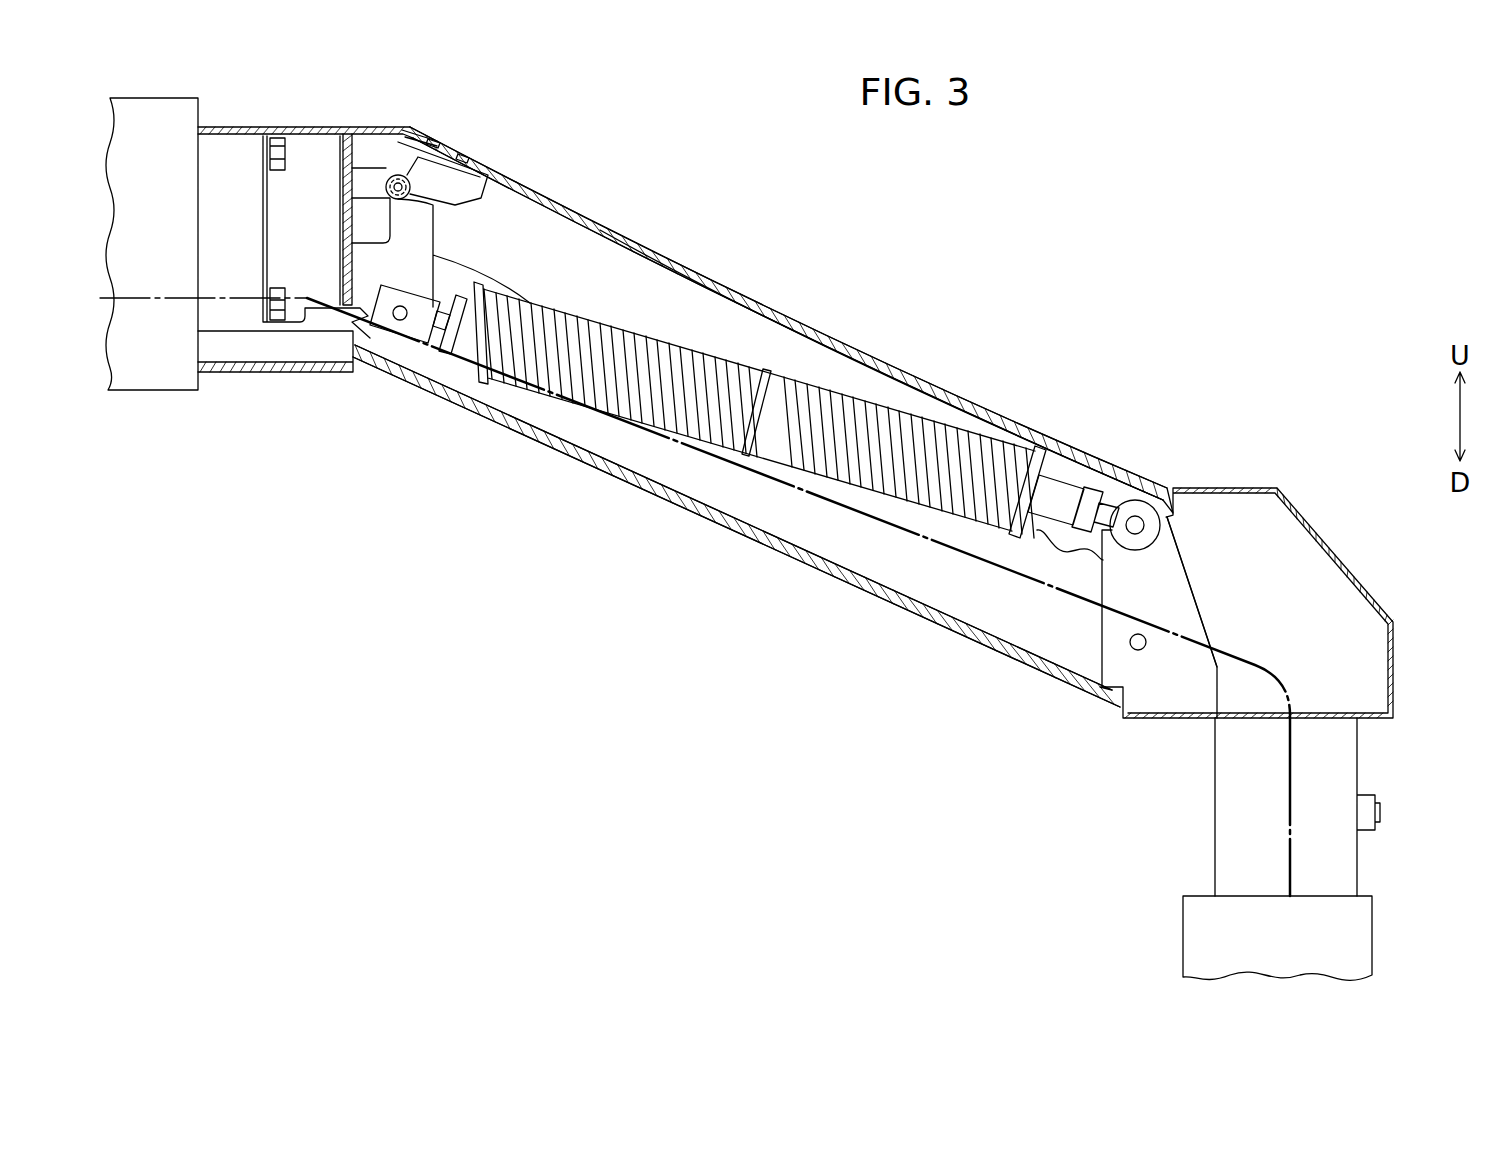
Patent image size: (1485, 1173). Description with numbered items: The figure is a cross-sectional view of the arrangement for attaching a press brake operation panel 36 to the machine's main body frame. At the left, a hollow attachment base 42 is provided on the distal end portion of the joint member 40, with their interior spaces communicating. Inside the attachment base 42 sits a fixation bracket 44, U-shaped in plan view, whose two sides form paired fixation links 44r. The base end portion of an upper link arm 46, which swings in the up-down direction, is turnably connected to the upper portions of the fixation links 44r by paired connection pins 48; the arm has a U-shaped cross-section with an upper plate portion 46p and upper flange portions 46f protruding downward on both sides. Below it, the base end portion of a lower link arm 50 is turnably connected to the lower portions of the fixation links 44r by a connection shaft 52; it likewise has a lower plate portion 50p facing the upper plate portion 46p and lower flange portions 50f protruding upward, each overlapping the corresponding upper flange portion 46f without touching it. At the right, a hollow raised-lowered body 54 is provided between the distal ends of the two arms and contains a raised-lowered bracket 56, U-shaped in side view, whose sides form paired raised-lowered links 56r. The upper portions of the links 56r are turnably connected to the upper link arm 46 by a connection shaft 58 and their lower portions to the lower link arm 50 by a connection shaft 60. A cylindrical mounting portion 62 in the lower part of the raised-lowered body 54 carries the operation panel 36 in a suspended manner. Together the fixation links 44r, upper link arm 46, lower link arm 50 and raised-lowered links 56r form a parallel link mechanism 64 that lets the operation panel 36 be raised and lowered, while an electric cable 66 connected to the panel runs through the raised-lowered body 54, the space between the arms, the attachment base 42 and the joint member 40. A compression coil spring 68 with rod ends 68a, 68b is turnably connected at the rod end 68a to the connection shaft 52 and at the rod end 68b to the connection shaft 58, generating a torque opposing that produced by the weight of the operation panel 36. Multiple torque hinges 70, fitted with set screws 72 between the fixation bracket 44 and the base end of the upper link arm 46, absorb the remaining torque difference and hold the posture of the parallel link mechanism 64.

The operation panel 36 is at (1358, 948).
The joint member 40 is at (148, 392).
The attachment base 42 is at (297, 125).
The fixation bracket 44 is at (352, 152).
The fixation link 44r is at (420, 231).
The upper link arm 46 is at (785, 307).
The upper plate portion 46p is at (663, 252).
The upper flange portion 46f is at (912, 395).
The connection pin 48 is at (403, 175).
The lower link arm 50 is at (708, 514).
The lower plate portion 50p is at (590, 470).
The lower flange portion 50f is at (846, 568).
The connection shaft 52 is at (398, 321).
The raised-lowered body 54 is at (1307, 520).
The raised-lowered bracket 56 is at (1176, 690).
The raised-lowered link 56r is at (1175, 617).
The connection shaft 58 is at (1138, 500).
The connection shaft 60 is at (1137, 652).
The mounting portion 62 is at (1340, 858).
The parallel link mechanism 64 is at (733, 287).
The electric cable 66 is at (1012, 585).
The compression coil spring 68 is at (813, 382).
The rod end 68a is at (436, 336).
The rod end 68b is at (1063, 498).
The torque hinge 70 is at (473, 198).
The set screw 72 is at (462, 153).